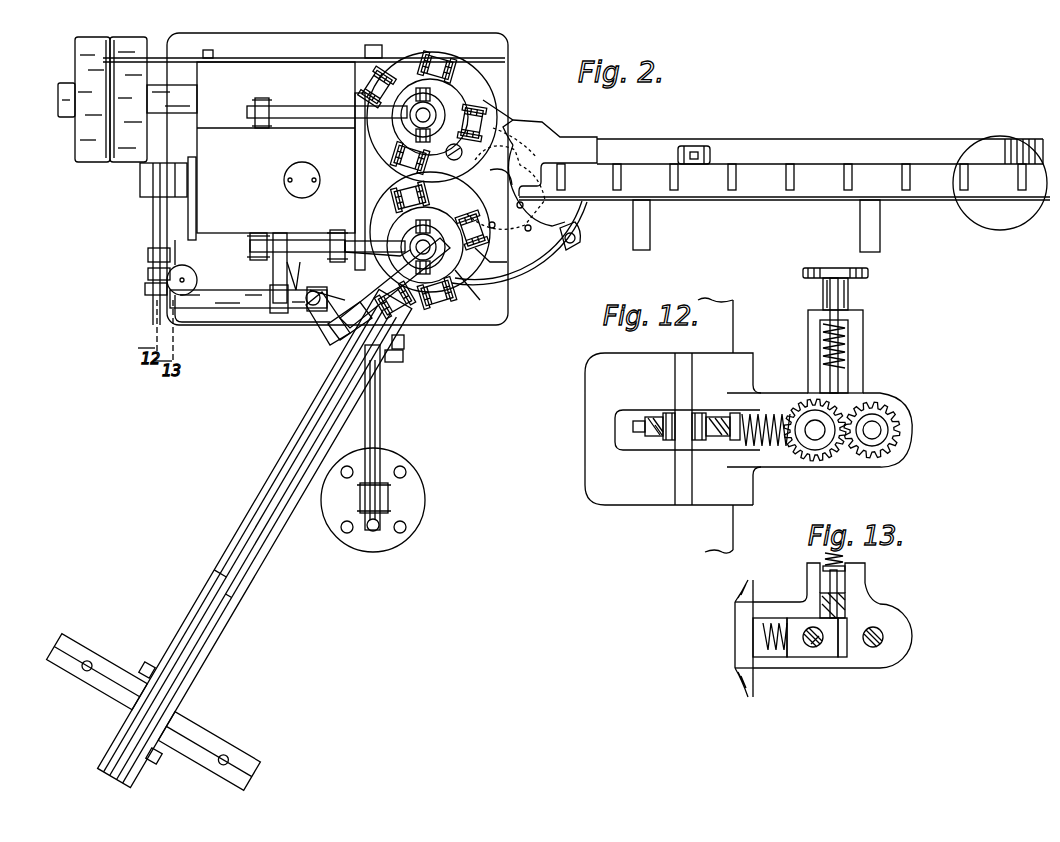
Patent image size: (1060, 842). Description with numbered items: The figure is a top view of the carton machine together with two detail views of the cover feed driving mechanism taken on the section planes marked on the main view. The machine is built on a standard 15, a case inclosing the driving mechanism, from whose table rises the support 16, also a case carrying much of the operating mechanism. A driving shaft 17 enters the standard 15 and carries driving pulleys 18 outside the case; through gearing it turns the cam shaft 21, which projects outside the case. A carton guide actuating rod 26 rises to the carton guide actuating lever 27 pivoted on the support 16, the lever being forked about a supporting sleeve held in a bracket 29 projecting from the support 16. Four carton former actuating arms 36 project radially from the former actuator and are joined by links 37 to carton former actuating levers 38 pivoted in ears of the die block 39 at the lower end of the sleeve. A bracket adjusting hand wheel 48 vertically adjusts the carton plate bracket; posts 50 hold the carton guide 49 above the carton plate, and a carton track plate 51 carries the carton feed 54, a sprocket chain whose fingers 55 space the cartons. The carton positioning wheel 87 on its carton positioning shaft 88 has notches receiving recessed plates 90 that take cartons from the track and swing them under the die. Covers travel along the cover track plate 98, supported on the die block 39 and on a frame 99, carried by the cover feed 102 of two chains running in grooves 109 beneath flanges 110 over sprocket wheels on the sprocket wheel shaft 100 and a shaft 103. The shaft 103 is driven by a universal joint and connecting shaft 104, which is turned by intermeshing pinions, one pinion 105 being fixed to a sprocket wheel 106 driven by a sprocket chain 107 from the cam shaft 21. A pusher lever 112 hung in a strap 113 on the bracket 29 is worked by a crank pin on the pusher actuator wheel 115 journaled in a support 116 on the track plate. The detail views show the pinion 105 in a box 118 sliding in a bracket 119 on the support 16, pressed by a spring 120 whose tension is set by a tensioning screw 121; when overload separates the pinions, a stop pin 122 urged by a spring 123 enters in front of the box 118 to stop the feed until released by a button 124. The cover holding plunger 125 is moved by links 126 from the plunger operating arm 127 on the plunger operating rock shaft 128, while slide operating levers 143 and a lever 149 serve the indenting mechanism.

In FIG. 2, the standard 15 is at (508, 316).
In FIG. 2, the support 16 is at (207, 140).
In FIG. 12, the support 16 is at (733, 316).
In FIG. 2, the driving shaft 17 is at (55, 96).
In FIG. 2, the driving pulleys 18 is at (88, 38).
In FIG. 2, the cam shaft 21 is at (140, 177).
In FIG. 2, the carton guide actuating rod 26 is at (252, 232).
In FIG. 2, the carton guide actuating lever 27 is at (283, 240).
In FIG. 2, the bracket 29 is at (358, 160).
In FIG. 2, the carton former actuating arms 36 is at (430, 245).
In FIG. 2, the links 37 is at (492, 240).
In FIG. 2, the carton former actuating levers 38 is at (500, 212).
In FIG. 2, the die block 39 is at (470, 288).
In FIG. 2, the bracket adjusting hand wheel 48 is at (527, 262).
In FIG. 2, the carton guide 49 is at (518, 272).
In FIG. 2, the posts 50 is at (575, 240).
In FIG. 2, the carton track plate 51 is at (771, 193).
In FIG. 2, the carton feed 54 is at (694, 148).
In FIG. 2, the fingers 55 is at (794, 174).
In FIG. 2, the carton positioning wheel 87 is at (512, 128).
In FIG. 2, the carton positioning shaft 88 is at (498, 152).
In FIG. 2, the recessed plates 90 is at (504, 178).
In FIG. 2, the cover track plate 98 is at (185, 612).
In FIG. 2, the frame 99 is at (232, 752).
In FIG. 2, the sprocket wheel shaft 100 is at (160, 767).
In FIG. 2, the cover feed 102 is at (170, 658).
In FIG. 2, the shaft 103 is at (400, 346).
In FIG. 2, the connecting shaft 104 is at (237, 310).
In FIG. 2, the pinion 105 is at (148, 257).
In FIG. 12, the pinion 105 is at (818, 455).
In FIG. 2, the sprocket wheel 106 is at (145, 289).
In FIG. 2, the sprocket chain 107 is at (153, 234).
In FIG. 2, the grooves 109 is at (190, 670).
In FIG. 2, the flanges 110 is at (278, 530).
In FIG. 2, the pusher lever 112 is at (395, 305).
In FIG. 2, the strap 113 is at (392, 362).
In FIG. 2, the pusher actuator wheel 115 is at (350, 350).
In FIG. 2, the support 116 is at (345, 333).
In FIG. 13, the box 118 is at (828, 657).
In FIG. 12, the bracket 119 is at (717, 495).
In FIG. 13, the bracket 119 is at (745, 683).
In FIG. 12, the spring 120 is at (765, 410).
In FIG. 13, the spring 120 is at (772, 620).
In FIG. 12, the tensioning screw 121 is at (650, 437).
In FIG. 12, the stop pin 122 is at (840, 372).
In FIG. 13, the stop pin 122 is at (840, 584).
In FIG. 12, the spring 123 is at (845, 345).
In FIG. 13, the spring 123 is at (826, 558).
In FIG. 2, the button 124 is at (197, 280).
In FIG. 12, the button 124 is at (820, 282).
In FIG. 2, the cover holding plunger 125 is at (405, 243).
In FIG. 2, the links 126 is at (405, 255).
In FIG. 2, the plunger operating arm 127 is at (350, 240).
In FIG. 2, the plunger operating rock shaft 128 is at (342, 260).
In FIG. 2, the slide operating levers 143 is at (445, 62).
In FIG. 2, the lever 149 is at (292, 112).